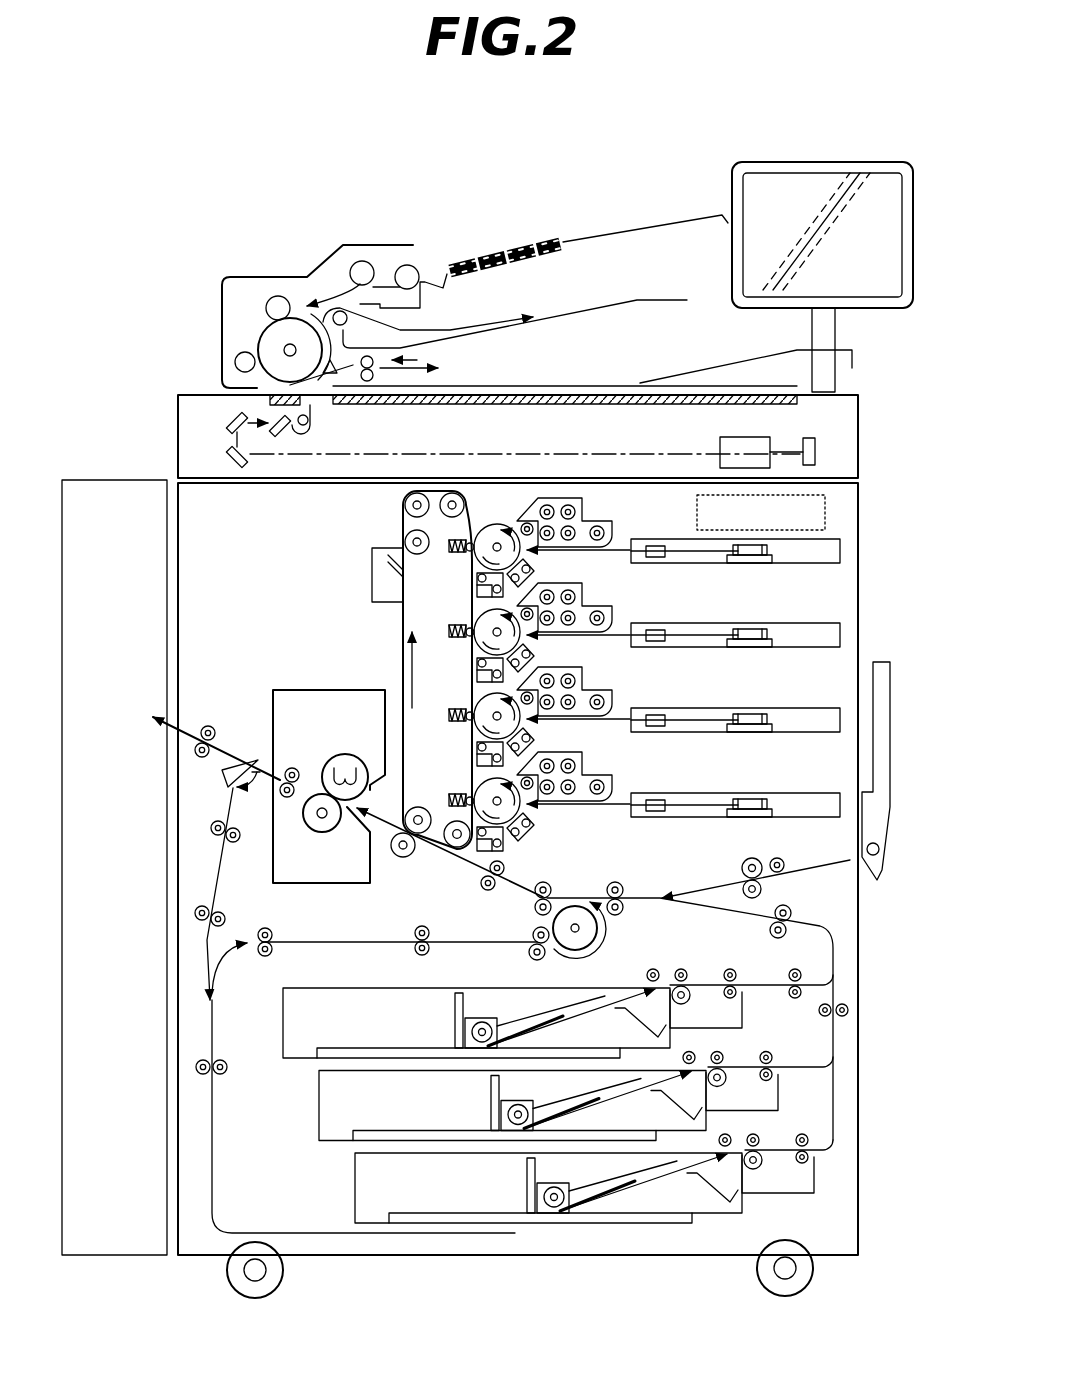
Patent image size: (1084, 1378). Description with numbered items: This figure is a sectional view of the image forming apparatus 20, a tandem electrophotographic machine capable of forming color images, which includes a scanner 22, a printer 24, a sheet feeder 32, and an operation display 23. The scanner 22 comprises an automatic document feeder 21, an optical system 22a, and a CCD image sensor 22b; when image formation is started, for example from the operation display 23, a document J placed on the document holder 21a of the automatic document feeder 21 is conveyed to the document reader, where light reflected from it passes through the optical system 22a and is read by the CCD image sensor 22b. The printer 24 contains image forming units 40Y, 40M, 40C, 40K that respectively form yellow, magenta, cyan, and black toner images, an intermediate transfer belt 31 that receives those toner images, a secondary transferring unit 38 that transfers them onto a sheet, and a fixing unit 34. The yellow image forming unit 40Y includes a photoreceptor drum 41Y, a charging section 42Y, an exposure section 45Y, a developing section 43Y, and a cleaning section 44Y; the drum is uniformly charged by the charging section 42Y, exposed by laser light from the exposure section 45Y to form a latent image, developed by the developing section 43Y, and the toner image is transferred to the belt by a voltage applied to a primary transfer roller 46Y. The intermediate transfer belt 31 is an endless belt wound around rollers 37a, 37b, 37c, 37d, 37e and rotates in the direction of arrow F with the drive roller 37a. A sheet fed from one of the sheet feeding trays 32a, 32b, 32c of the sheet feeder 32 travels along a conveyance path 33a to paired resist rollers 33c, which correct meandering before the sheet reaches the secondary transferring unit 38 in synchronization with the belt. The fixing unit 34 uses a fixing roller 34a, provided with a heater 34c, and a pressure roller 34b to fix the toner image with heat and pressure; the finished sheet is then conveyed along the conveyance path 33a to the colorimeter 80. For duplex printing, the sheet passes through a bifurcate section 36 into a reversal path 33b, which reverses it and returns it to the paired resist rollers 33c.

The image forming apparatus 20 is at (630, 158).
The automatic document feeder 21 is at (537, 273).
The document holder 21a is at (683, 222).
The document J is at (560, 237).
The scanner 22 is at (531, 430).
The optical system 22a is at (220, 443).
The CCD image sensor 22b is at (838, 452).
The operation display 23 is at (843, 162).
The printer 24 is at (860, 578).
The colorimeter 80 is at (120, 477).
The intermediate transfer belt 31 is at (407, 669).
The arrow F is at (407, 678).
The drive roller 37a is at (410, 497).
The roller 37b is at (450, 497).
The roller 37c is at (447, 858).
The roller 37d is at (418, 808).
The roller 37e is at (407, 537).
The secondary transferring unit 38 is at (397, 862).
The image forming unit 40Y is at (553, 555).
The image forming unit 40M is at (618, 607).
The image forming unit 40C is at (618, 692).
The image forming unit 40K is at (618, 777).
The photoreceptor drum 41Y is at (498, 529).
The charging section 42Y is at (559, 571).
The developing section 43Y is at (586, 517).
The cleaning section 44Y is at (455, 598).
The exposure section 45Y is at (710, 563).
The primary transfer roller 46Y is at (440, 566).
The sheet feeder 32 is at (474, 1096).
The sheet feeding tray 32a is at (282, 1025).
The sheet feeding tray 32b is at (282, 1107).
The sheet feeding tray 32c is at (282, 1190).
The conveyance path 33a is at (232, 750).
The reversal path 33b is at (330, 940).
The paired resist rollers 33c is at (483, 897).
The fixing unit 34 is at (321, 760).
The fixing roller 34a is at (325, 760).
The pressure roller 34b is at (312, 830).
The heater 34c is at (350, 767).
The bifurcate section 36 is at (222, 783).